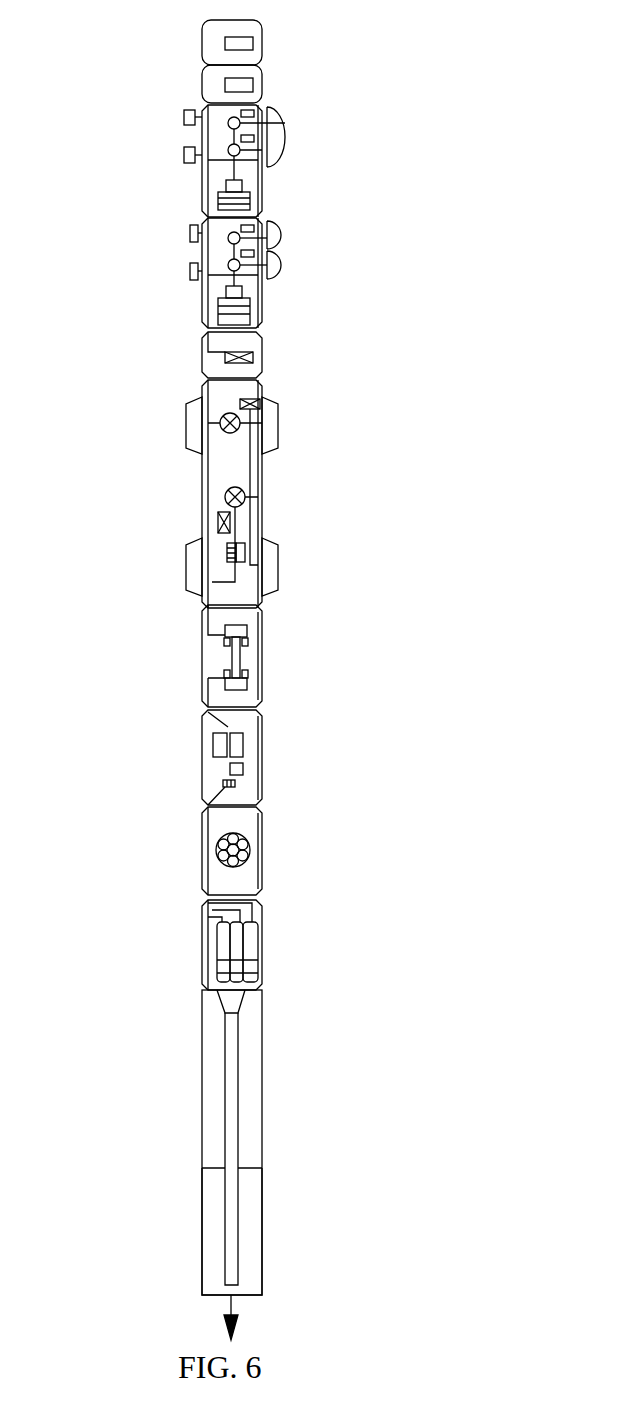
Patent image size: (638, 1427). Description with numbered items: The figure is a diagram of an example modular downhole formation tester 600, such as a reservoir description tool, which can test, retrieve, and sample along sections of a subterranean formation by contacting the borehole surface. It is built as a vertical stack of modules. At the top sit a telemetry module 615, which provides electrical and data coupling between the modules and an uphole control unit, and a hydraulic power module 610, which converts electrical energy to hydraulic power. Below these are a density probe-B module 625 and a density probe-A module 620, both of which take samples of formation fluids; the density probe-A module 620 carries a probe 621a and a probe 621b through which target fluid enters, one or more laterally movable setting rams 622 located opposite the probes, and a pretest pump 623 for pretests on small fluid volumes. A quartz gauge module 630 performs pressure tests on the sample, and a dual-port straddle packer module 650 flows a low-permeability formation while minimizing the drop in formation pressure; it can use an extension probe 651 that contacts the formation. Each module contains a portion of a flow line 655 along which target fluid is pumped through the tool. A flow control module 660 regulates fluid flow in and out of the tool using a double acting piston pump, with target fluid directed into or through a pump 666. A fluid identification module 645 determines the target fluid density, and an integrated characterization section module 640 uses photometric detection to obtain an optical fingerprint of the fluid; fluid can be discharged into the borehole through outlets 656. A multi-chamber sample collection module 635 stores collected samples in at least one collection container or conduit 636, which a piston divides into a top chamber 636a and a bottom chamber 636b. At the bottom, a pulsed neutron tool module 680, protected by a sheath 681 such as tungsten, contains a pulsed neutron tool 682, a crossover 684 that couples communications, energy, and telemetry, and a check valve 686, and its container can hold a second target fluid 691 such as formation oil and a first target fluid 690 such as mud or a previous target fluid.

The modular downhole formation tester 600 is at (77, 62).
The telemetry module 615 is at (264, 41).
The hydraulic power module 610 is at (264, 86).
The density probe-B module (DPS-B) 625 is at (263, 196).
The density probe-A module (DPS-A) 620 is at (263, 314).
The probe 621a is at (281, 241).
The probe 621b is at (283, 270).
The setting rams 622 is at (190, 232).
The pretest pump 623 is at (230, 308).
The quartz gauge module (QGS-A) 630 is at (263, 357).
The dual-port straddle packer module (SPS) 650 is at (263, 516).
The extension probe 651 is at (279, 428).
The flow line 655 is at (207, 490).
The flow control module (FPS) 660 is at (262, 658).
The pump 666 is at (232, 655).
The fluid identification module (FLID) 645 is at (262, 757).
The integrated characterization section module (ICS) 640 is at (262, 857).
The outlets 656 is at (203, 853).
The multi-chamber sample collection module (MCS) 635 is at (270, 963).
The collection container or conduit 636 is at (266, 936).
The top chamber 636a is at (217, 938).
The bottom chamber 636b is at (218, 972).
The pulsed neutron tool module 680 is at (270, 1035).
The sheath 681 is at (262, 1080).
The second target fluid 691 is at (250, 1125).
The first target fluid 690 is at (250, 1200).
The crossover 684 is at (222, 1003).
The pulsed neutron tool 682 is at (222, 1125).
The check valve 686 is at (233, 1300).